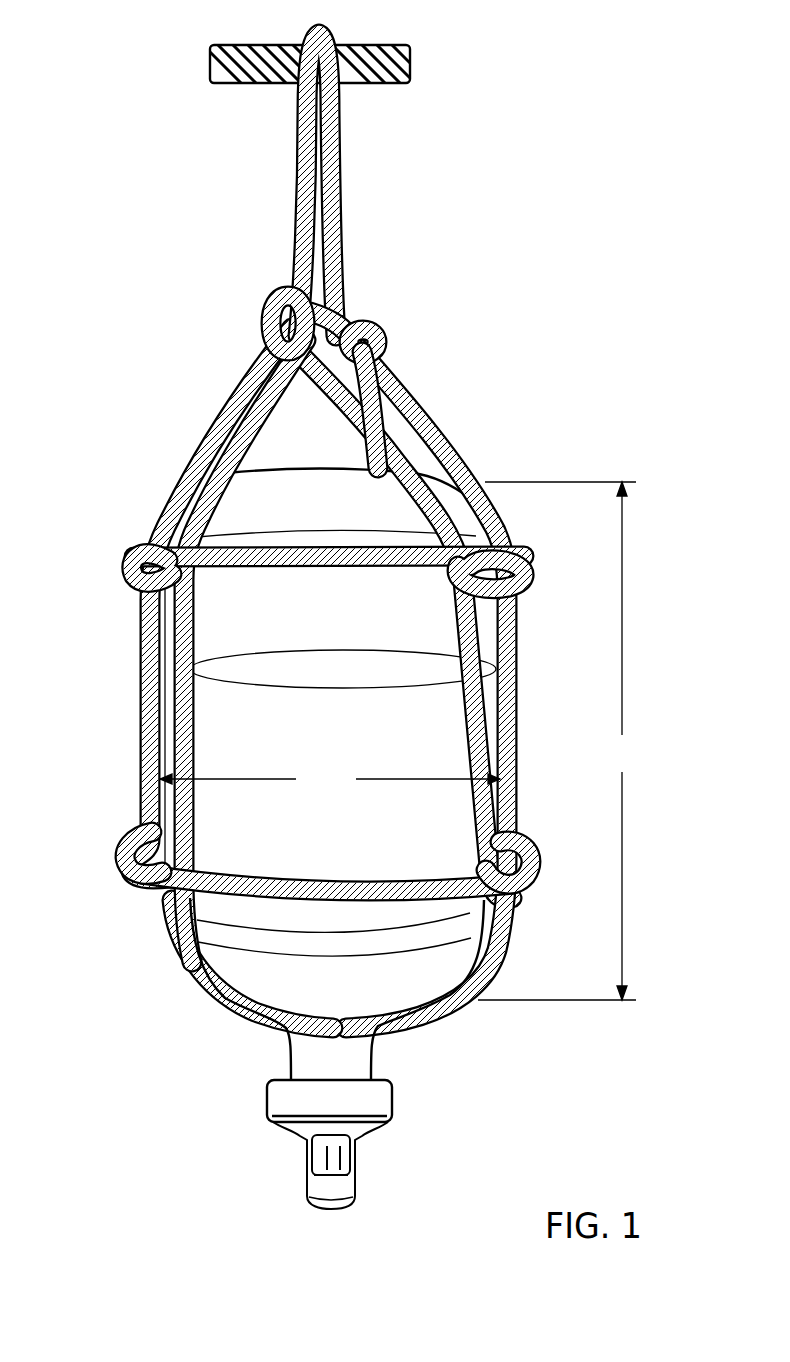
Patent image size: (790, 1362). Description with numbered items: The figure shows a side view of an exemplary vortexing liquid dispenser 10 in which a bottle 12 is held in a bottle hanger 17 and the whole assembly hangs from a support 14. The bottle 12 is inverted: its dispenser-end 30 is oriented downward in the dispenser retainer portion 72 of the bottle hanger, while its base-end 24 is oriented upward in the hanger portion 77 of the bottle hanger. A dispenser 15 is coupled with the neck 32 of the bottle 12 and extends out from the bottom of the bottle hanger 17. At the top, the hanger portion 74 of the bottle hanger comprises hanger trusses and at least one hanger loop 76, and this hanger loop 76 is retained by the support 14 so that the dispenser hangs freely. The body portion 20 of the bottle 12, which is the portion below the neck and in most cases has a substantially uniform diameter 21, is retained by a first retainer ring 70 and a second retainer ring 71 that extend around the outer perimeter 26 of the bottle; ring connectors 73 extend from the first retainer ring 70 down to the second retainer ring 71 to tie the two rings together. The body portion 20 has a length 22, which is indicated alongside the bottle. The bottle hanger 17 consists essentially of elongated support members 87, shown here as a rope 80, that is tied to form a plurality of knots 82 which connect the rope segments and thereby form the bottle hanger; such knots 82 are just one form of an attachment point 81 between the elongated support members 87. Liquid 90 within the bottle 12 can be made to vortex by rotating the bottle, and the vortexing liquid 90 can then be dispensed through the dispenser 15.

The vortexing liquid dispenser 10 is at (339, 621).
The bottle 12 is at (366, 731).
The support 14 is at (410, 48).
The dispenser 15 is at (320, 1187).
The bottle hanger 17 is at (423, 410).
The body portion 20 is at (277, 707).
The diameter 21 is at (330, 779).
The length 22 is at (557, 741).
The base-end 24 is at (457, 474).
The outer perimeter 26 is at (460, 676).
The dispenser-end 30 is at (284, 997).
The neck 32 is at (304, 1052).
The first retainer ring 70 is at (274, 584).
The second retainer ring 71 is at (313, 882).
The dispenser retainer portion 72 is at (440, 1004).
The ring connectors 73 is at (177, 645).
The hanger portion 74 is at (360, 306).
The hanger loop 76 is at (295, 215).
The hanger portion 77 is at (187, 480).
The rope 80 is at (180, 492).
The attachment point 81 is at (130, 573).
The knots 82 is at (124, 545).
The elongated support members 87 is at (393, 360).
The liquid 90 is at (340, 684).